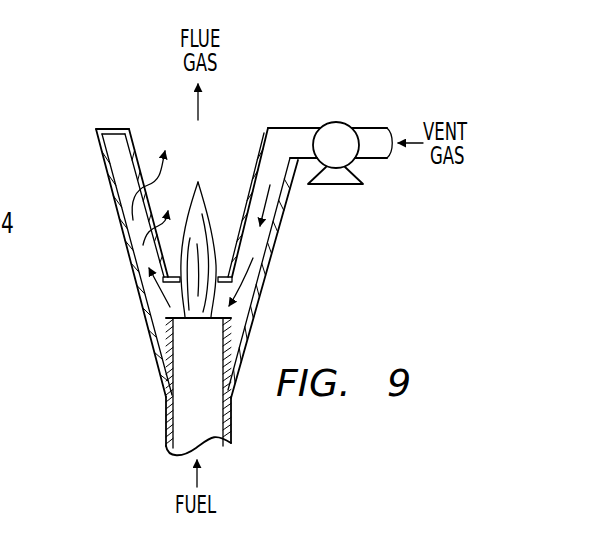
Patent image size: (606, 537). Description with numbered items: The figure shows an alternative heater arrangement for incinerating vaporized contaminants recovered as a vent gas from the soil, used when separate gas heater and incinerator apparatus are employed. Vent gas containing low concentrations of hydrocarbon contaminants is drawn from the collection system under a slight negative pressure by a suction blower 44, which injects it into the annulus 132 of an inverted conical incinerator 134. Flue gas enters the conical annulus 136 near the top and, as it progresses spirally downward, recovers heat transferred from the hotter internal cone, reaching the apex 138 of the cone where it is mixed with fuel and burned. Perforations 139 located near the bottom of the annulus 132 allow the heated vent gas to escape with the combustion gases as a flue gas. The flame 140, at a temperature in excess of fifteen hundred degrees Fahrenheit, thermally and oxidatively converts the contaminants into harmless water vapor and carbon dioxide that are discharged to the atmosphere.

The suction blower 44 is at (337, 122).
The annulus 132 is at (281, 221).
The inverted conical incinerator 134 is at (66, 134).
The conical annulus 136 is at (115, 201).
The apex 138 is at (150, 338).
The perforations 139 is at (128, 255).
The flame 140 is at (211, 214).